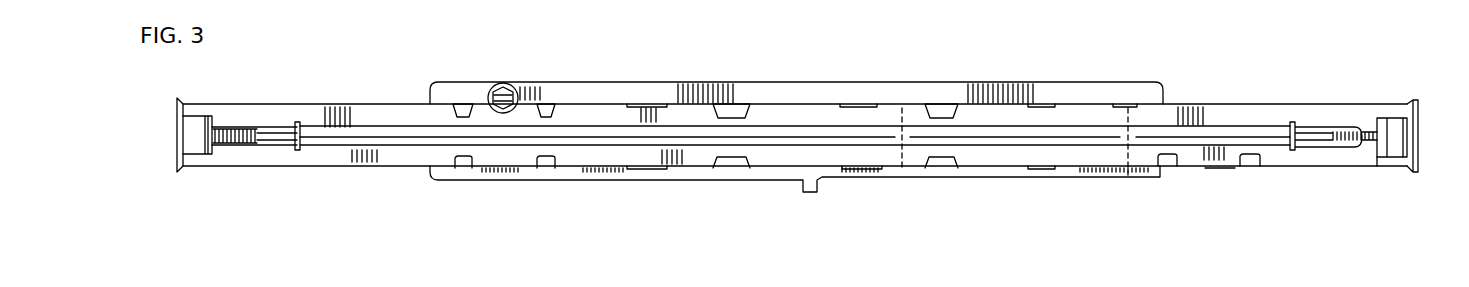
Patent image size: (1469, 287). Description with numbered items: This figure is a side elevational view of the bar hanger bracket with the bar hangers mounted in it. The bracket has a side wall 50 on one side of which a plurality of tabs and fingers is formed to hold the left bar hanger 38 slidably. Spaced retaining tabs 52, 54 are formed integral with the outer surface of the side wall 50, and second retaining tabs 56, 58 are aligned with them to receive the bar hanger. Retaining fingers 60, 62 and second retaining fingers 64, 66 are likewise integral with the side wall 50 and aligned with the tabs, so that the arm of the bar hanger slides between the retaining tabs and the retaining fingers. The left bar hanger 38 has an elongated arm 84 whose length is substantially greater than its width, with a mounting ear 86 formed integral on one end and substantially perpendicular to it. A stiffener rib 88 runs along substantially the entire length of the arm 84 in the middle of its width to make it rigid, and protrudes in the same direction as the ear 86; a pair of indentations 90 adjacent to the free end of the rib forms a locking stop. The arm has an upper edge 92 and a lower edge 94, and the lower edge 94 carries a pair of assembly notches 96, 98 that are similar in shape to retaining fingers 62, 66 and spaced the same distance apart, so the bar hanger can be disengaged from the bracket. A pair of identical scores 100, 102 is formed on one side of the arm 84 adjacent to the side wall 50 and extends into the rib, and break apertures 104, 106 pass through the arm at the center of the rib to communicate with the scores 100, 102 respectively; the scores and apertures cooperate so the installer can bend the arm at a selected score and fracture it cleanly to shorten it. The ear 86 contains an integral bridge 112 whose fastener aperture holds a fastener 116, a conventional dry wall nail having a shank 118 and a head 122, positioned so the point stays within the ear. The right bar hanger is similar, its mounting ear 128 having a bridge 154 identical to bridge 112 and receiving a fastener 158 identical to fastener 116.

The left bar hanger 38 is at (326, 166).
The side wall 50 is at (1015, 100).
The retaining tab 52 is at (730, 107).
The retaining tab 54 is at (727, 168).
The second retaining tab 56 is at (945, 110).
The second retaining tab 58 is at (945, 168).
The retaining finger 60 is at (455, 104).
The retaining finger 62 is at (462, 168).
The second retaining finger 64 is at (547, 104).
The second retaining finger 66 is at (547, 168).
The elongated arm 84 is at (388, 112).
The mounting ear 86 is at (177, 103).
The stiffener rib 88 is at (323, 132).
The indentations 90 is at (1368, 150).
The upper edge 92 is at (1212, 115).
The lower edge 94 is at (1212, 166).
The assembly notch 96 is at (1170, 166).
The assembly notch 98 is at (1252, 165).
The score 100 is at (897, 120).
The score 102 is at (1132, 120).
The break aperture 104 is at (900, 138).
The break aperture 106 is at (1128, 145).
The bridge 112 is at (190, 116).
The fastener 116 is at (275, 128).
The shank 118 is at (263, 136).
The head 122 is at (296, 129).
The mounting ear 128 is at (1418, 104).
The bridge 154 is at (1392, 125).
The fastener 158 is at (1316, 128).